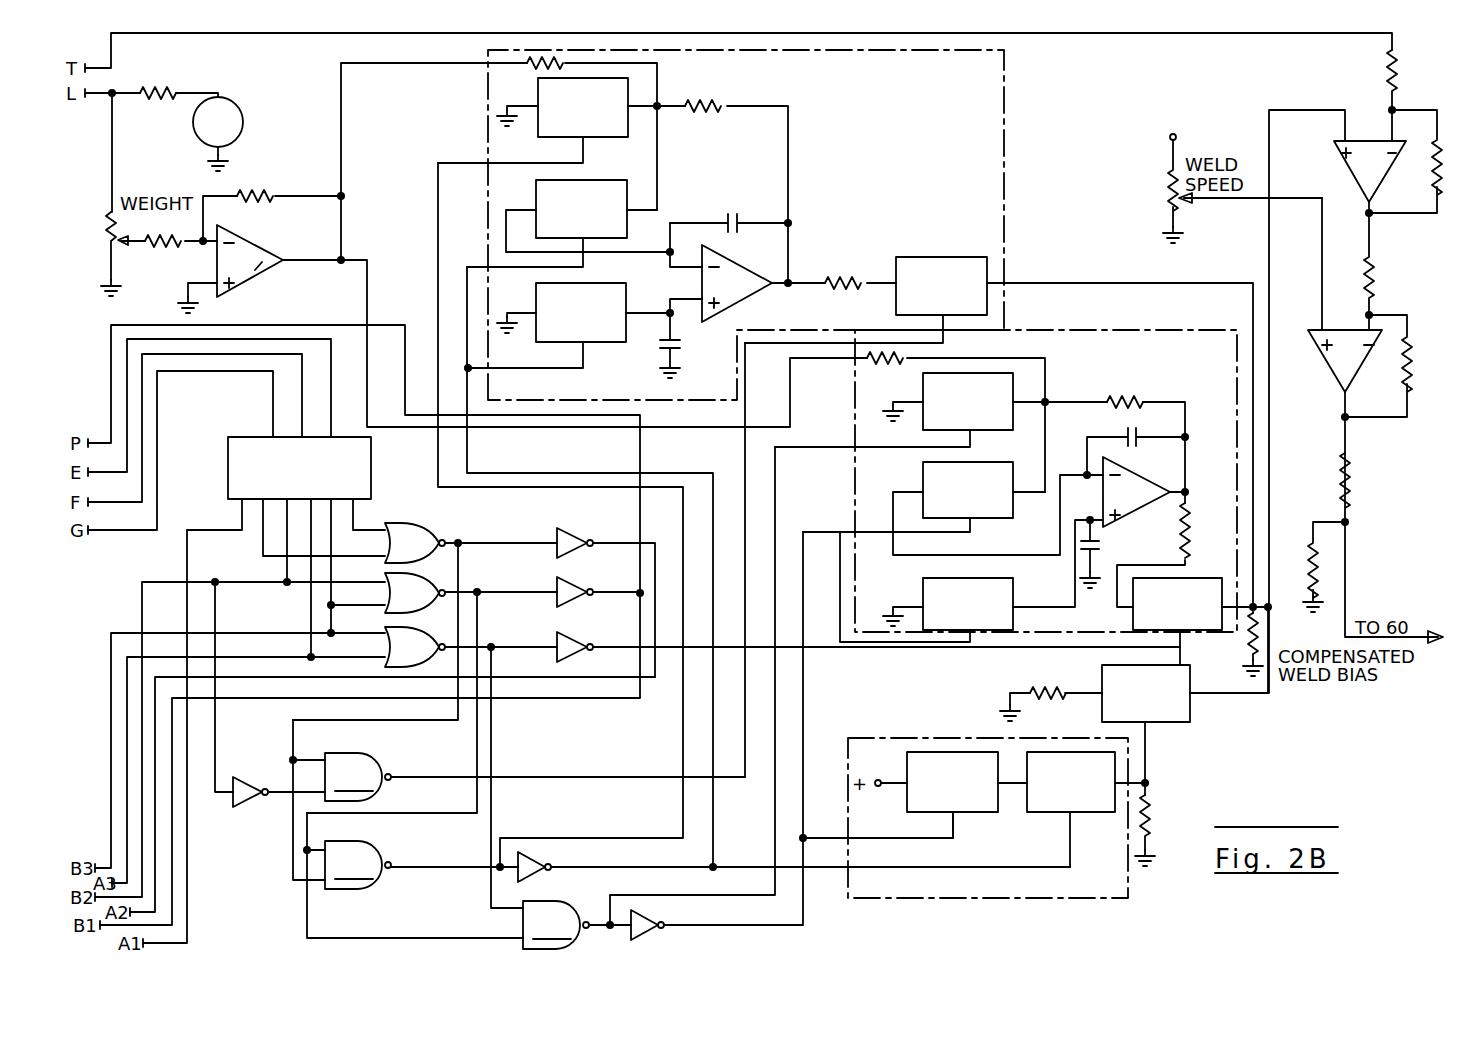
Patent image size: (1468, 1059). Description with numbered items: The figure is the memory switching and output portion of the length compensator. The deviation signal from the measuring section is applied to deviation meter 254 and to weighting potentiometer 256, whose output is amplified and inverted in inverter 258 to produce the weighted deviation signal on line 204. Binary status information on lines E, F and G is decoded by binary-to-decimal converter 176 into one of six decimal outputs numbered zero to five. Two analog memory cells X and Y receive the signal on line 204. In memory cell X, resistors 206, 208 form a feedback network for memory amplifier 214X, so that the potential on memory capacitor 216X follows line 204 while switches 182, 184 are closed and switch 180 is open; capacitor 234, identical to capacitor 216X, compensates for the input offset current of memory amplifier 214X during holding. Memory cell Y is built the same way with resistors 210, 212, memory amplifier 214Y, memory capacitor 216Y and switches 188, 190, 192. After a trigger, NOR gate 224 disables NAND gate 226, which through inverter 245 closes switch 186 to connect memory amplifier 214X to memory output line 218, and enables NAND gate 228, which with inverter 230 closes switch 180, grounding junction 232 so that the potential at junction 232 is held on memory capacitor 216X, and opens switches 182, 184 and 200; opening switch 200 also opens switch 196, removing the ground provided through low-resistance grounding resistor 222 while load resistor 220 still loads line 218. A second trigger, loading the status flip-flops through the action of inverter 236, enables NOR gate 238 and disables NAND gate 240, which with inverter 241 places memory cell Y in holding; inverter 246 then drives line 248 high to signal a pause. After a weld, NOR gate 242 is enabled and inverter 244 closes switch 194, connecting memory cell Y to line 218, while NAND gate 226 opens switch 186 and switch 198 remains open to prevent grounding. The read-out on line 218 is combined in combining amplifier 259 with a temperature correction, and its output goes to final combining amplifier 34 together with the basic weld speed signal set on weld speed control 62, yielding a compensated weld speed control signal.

The deviation meter 254 is at (241, 112).
The weighting potentiometer 256 is at (122, 247).
The inverter 258 is at (257, 283).
The line 204 is at (303, 265).
The resistor 206 is at (530, 75).
The electronic switch 180 is at (590, 141).
The electronic switch 182 is at (598, 191).
The electronic switch 184 is at (596, 291).
The junction 232 is at (660, 106).
The resistor 208 is at (698, 123).
The memory capacitor 216X is at (747, 200).
The memory amplifier 214X is at (727, 272).
The capacitor 234 is at (660, 346).
The electronic switch 186 is at (953, 266).
The memory cell X is at (1004, 96).
The memory cell Y is at (1090, 330).
The weld speed control 62 is at (1170, 198).
The combining amplifier 259 is at (1358, 176).
The final combining amplifier 34 is at (1336, 374).
The memory output line 218 is at (1273, 456).
The binary-to-decimal converter 176 is at (228, 468).
The NOR gate 224 is at (415, 538).
The NOR gate 238 is at (405, 590).
The NOR gate 242 is at (395, 645).
The inverter 236 is at (571, 546).
The inverter 246 is at (577, 601).
The inverter 244 is at (573, 649).
The line 248 is at (606, 699).
The NAND gate 226 is at (519, 800).
The NAND gate 228 is at (415, 875).
The inverter 245 is at (262, 806).
The inverter 230 is at (532, 876).
The NAND gate 240 is at (577, 925).
The inverter 241 is at (653, 932).
The resistor 210 is at (908, 368).
The electronic switch 188 is at (984, 433).
The electronic switch 190 is at (1000, 521).
The electronic switch 192 is at (923, 590).
The resistor 212 is at (1116, 402).
The memory capacitor 216Y is at (1129, 436).
The memory amplifier 214Y is at (1123, 529).
The electronic switch 194 is at (1197, 580).
The load resistor 220 is at (1249, 641).
The grounding resistor 222 is at (1058, 694).
The electronic switch 196 is at (1191, 722).
The electronic switch 198 is at (910, 812).
The electronic switch 200 is at (1052, 812).